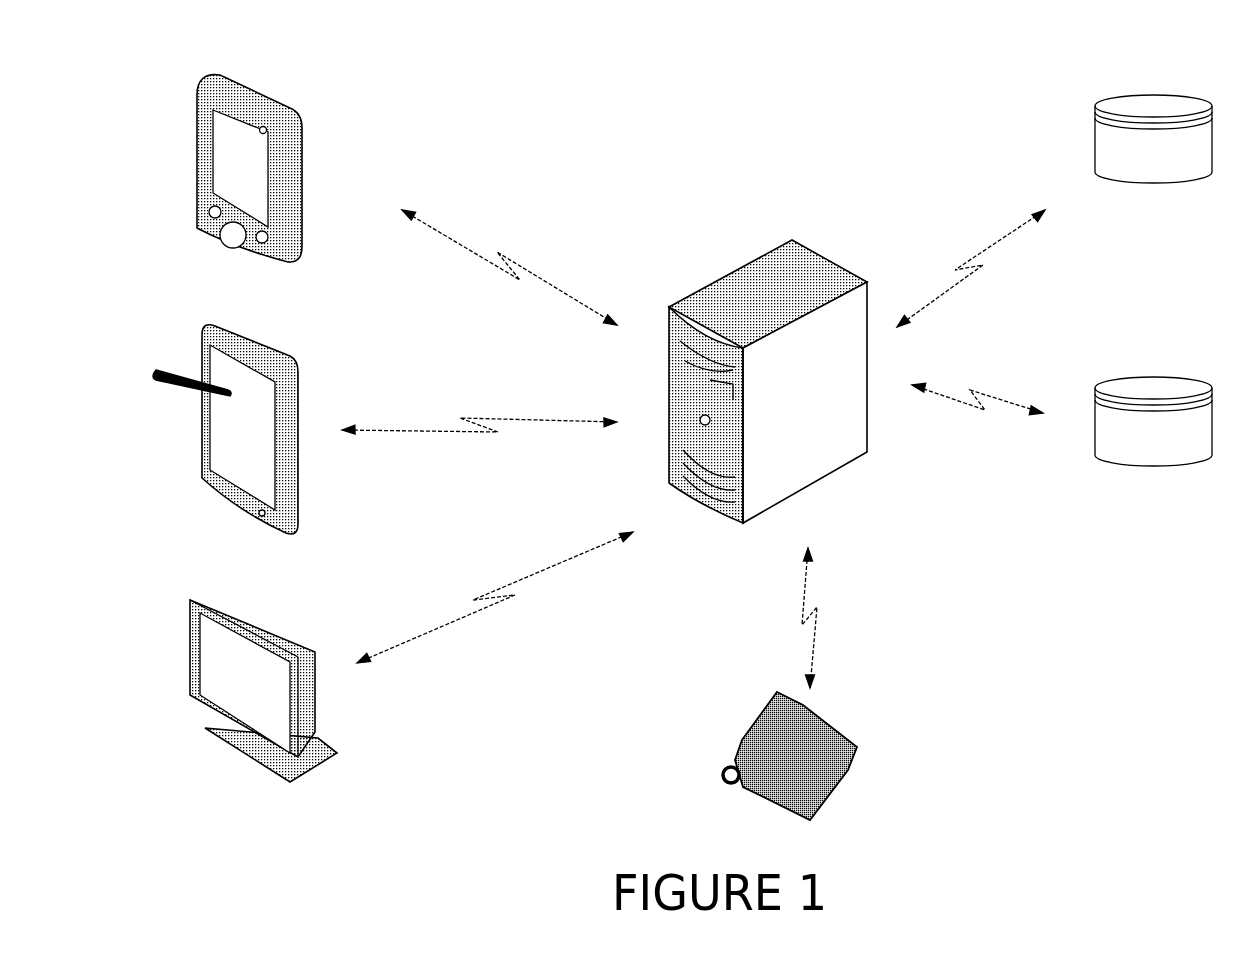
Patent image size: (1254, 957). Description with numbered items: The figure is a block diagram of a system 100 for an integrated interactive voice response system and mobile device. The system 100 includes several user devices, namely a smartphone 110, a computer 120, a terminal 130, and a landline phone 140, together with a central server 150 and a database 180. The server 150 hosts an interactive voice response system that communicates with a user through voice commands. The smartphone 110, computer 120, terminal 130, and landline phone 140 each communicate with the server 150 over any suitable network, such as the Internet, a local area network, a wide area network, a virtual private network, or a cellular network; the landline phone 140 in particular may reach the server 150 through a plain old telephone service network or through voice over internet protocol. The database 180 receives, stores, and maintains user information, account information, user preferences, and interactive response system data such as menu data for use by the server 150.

The system 100 is at (840, 104).
The smartphone 110 is at (249, 186).
The computer 120 is at (225, 443).
The terminal 130 is at (263, 707).
The landline phone 140 is at (790, 766).
The server 150 is at (768, 396).
The database 180 is at (1173, 169).